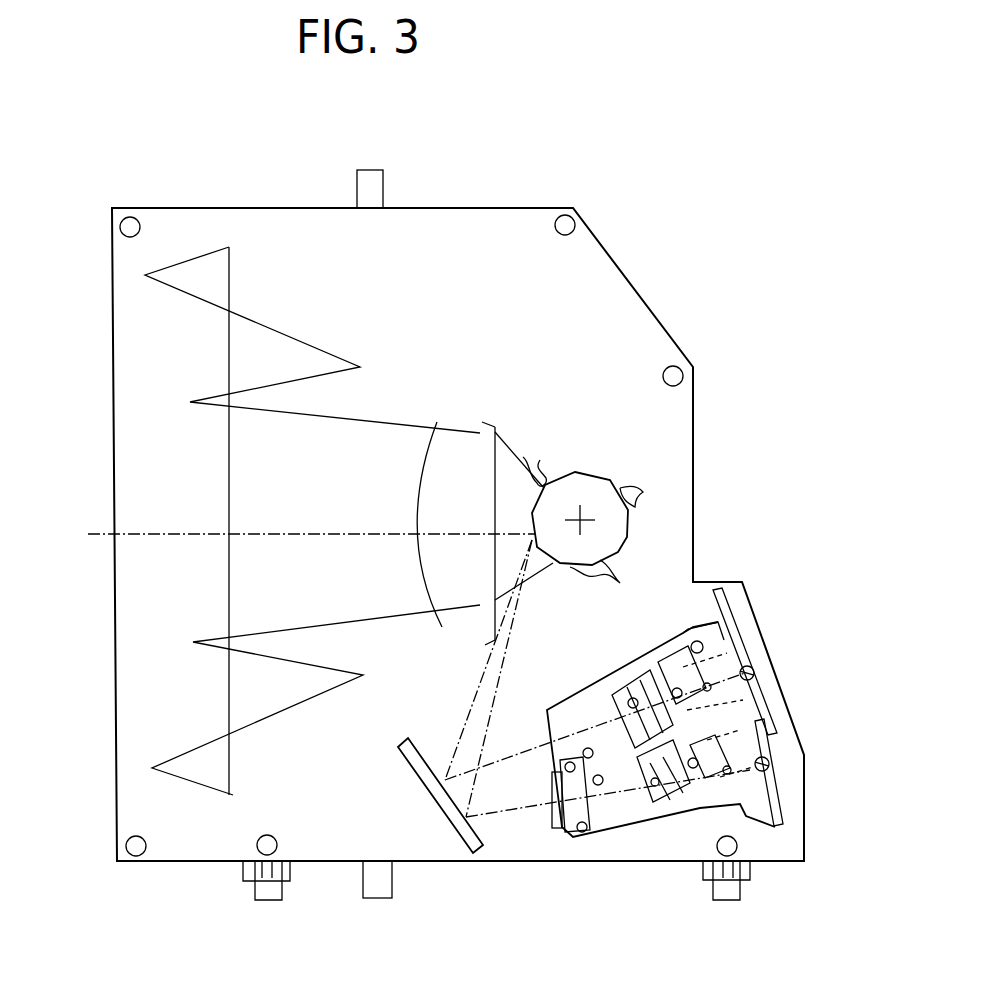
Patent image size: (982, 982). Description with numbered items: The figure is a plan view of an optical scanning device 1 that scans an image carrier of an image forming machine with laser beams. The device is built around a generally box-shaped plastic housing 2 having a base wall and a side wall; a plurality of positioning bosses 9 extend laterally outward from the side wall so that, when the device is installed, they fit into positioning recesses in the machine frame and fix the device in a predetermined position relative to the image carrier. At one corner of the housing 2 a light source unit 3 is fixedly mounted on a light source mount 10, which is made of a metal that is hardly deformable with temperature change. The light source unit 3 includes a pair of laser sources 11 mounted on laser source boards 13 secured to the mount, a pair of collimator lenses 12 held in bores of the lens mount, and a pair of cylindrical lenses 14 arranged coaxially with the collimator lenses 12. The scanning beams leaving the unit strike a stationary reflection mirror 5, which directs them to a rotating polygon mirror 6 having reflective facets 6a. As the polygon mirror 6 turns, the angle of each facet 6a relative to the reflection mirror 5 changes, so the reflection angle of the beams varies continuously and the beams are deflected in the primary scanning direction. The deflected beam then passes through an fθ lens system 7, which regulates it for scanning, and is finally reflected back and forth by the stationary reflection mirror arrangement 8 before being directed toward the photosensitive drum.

The optical scanning device 1 is at (672, 266).
The plastic housing 2 is at (393, 307).
The light source unit 3 is at (610, 840).
The reflection mirror 5 is at (458, 835).
The polygon mirror 6 is at (590, 470).
The reflective facets 6a is at (546, 480).
The fθ lens system 7 is at (457, 420).
The reflection mirror arrangement 8 is at (168, 496).
The positioning bosses 9 is at (383, 172).
The light source mount 10 is at (562, 710).
The laser sources 11 is at (755, 673).
The collimator lenses 12 is at (660, 662).
The laser source boards 13 is at (722, 590).
The cylindrical lenses 14 is at (608, 690).